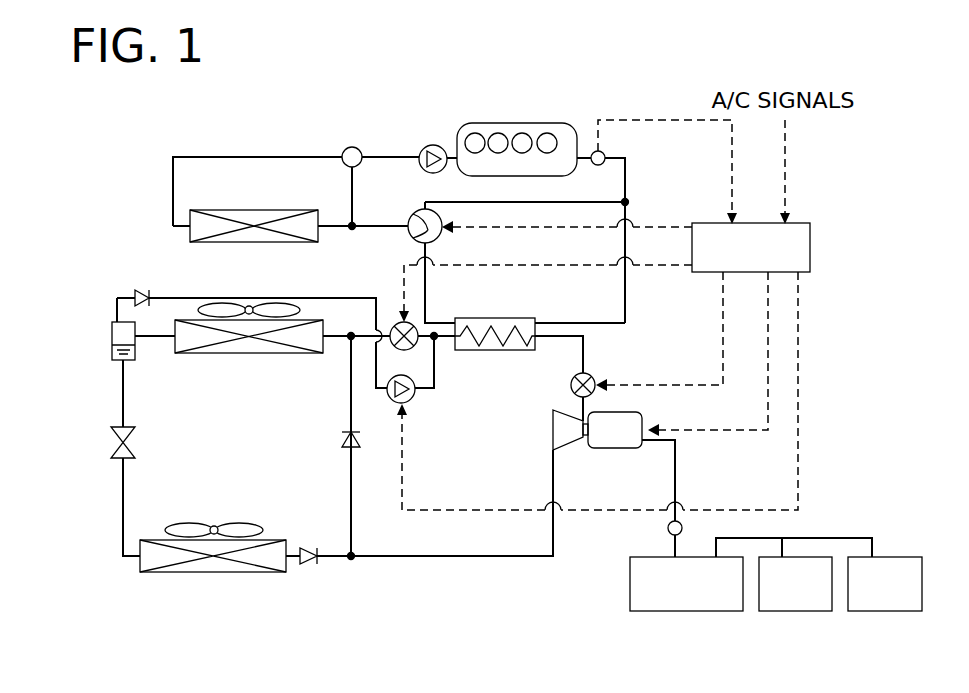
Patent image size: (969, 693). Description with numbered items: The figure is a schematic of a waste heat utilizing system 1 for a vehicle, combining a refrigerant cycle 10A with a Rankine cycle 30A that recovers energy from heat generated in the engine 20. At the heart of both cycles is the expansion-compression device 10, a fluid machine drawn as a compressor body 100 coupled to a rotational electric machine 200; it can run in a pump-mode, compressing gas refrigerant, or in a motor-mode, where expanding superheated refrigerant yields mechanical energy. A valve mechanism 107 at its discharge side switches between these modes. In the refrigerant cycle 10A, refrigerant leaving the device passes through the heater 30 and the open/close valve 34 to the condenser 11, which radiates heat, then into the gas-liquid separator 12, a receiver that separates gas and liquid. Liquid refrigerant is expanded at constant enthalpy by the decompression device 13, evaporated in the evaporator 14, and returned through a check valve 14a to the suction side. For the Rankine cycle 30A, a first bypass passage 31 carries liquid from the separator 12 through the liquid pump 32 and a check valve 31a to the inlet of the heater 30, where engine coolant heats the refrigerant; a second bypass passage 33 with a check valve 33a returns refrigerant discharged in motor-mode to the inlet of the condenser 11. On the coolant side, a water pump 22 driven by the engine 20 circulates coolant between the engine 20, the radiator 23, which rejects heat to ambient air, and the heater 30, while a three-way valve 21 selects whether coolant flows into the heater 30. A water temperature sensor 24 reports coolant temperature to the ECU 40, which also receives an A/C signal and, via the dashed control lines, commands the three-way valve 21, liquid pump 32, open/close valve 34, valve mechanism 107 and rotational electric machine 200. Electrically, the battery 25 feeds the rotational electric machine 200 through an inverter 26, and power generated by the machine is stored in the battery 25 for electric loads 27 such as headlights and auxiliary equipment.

The waste heat utilizing system 1 is at (100, 283).
The Rankine cycle 30A is at (110, 310).
The refrigerant cycle 10A is at (118, 400).
The check valve 31a is at (143, 290).
The gas-liquid separator 12 is at (137, 362).
The condenser 11 is at (249, 354).
The decompression device 13 is at (135, 447).
The evaporator 14 is at (280, 540).
The check valve 14a is at (310, 548).
The second bypass passage 33 is at (352, 535).
The check valve 33a is at (341, 435).
The radiator 23 is at (255, 210).
The water pump 22 is at (433, 145).
The engine 20 is at (524, 124).
The three-way valve 21 is at (412, 214).
The water temperature sensor 24 is at (605, 155).
The first bypass passage 31 is at (344, 298).
The open/close valve 34 is at (394, 323).
The heater 30 is at (497, 318).
The valve mechanism 107 is at (594, 377).
The liquid pump 32 is at (414, 396).
The expansion-compression device 10 is at (582, 438).
The expansion-compression device body 100 is at (566, 438).
The rotational electric machine 200 is at (620, 440).
The electronic control unit (ECU) 40 is at (812, 250).
The inverter 26 is at (665, 613).
The battery 25 is at (772, 613).
The electric loads 27 is at (862, 613).